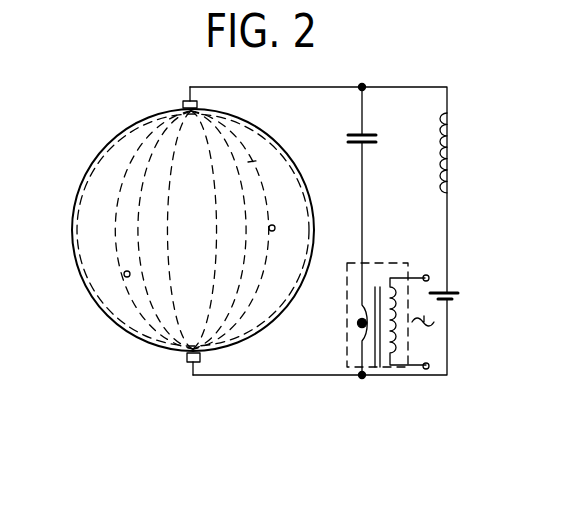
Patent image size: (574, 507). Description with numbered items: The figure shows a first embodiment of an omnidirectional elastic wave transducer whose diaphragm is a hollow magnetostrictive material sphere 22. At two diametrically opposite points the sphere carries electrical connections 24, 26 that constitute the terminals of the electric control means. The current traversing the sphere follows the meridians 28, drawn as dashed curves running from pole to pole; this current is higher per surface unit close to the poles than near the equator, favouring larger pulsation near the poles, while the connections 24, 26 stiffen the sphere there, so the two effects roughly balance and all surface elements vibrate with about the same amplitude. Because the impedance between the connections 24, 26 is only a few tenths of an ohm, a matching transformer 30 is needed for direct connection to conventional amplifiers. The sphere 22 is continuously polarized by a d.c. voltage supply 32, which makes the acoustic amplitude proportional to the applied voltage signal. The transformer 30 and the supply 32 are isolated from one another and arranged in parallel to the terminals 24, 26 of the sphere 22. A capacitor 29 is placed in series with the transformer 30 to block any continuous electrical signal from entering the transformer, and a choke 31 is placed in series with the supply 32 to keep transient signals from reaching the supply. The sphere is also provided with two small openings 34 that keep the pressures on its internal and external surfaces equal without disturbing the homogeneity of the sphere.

The hollow magnetostrictive material sphere 22 is at (78, 279).
The electrical connection 24 is at (183, 105).
The electrical connection 26 is at (186, 359).
The meridians 28 is at (292, 144).
The capacitor 29 is at (377, 150).
The matching transformer 30 is at (347, 343).
The choke 31 is at (440, 142).
The d.c. voltage supply 32 is at (437, 290).
The openings 34 is at (275, 228).